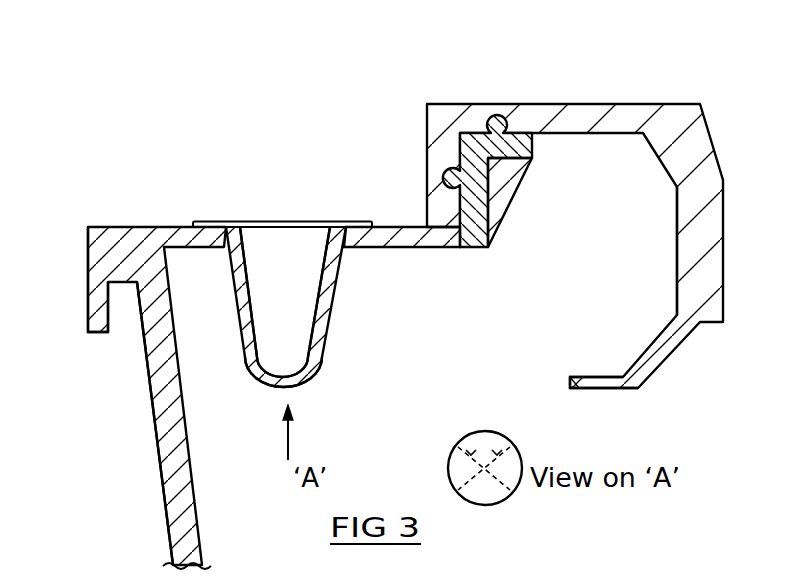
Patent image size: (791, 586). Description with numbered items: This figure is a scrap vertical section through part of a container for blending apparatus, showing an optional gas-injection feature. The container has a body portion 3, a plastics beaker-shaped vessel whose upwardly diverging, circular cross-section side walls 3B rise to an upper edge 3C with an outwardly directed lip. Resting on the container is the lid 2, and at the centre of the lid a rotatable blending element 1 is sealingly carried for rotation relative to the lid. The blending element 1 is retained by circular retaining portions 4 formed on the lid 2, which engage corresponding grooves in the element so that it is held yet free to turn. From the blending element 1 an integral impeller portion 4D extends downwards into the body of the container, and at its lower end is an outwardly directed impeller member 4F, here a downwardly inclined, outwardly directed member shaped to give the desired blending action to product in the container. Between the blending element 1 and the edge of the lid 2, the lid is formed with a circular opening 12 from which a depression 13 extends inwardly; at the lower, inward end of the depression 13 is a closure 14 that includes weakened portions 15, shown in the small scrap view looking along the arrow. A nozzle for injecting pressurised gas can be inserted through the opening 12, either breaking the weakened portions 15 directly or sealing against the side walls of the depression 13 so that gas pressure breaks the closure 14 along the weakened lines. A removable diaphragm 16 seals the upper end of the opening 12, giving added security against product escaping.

The blending element 1 is at (610, 86).
The lid 2 is at (418, 262).
The body portion 3 is at (140, 488).
The side walls 3B is at (152, 402).
The upper edge 3C is at (128, 262).
The retaining portions 4 is at (490, 113).
The impeller portion 4D is at (677, 252).
The impeller member 4F is at (617, 390).
The circular opening 12 is at (258, 258).
The depression 13 is at (331, 313).
The closure 14 is at (298, 385).
The weakened portions 15 is at (480, 432).
The diaphragm 16 is at (303, 220).